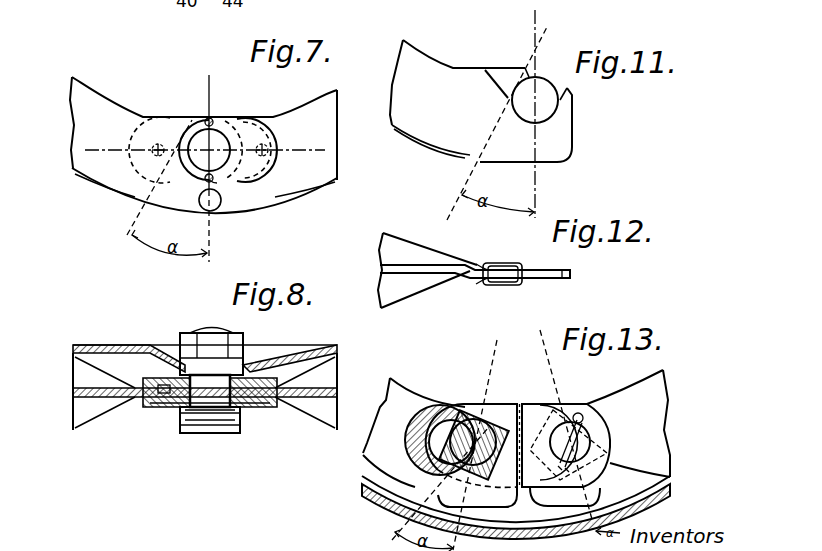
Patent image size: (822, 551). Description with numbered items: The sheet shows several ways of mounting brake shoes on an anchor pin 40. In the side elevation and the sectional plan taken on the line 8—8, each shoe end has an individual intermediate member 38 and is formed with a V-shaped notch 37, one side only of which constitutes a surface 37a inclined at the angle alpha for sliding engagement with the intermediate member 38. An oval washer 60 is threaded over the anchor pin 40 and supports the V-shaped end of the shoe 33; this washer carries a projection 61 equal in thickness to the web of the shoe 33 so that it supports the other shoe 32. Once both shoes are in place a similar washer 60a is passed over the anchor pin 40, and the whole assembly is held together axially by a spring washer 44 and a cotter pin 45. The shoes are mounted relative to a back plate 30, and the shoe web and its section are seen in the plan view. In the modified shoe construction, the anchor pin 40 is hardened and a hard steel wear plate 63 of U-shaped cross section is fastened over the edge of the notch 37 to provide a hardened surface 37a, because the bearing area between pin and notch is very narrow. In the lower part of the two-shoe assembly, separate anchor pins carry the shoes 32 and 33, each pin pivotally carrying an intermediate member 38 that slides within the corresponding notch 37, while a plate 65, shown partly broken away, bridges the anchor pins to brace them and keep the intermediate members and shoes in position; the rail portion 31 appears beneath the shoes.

In FIG. 7, the section line 8— 8 is at (92, 148).
In FIG. 8, the back plate 30 is at (88, 346).
In FIG. 13, the back plate 30 is at (388, 482).
In FIG. 13, the rail flange 31 is at (380, 505).
In FIG. 7, the shoe 32 is at (100, 123).
In FIG. 8, the shoe 32 is at (72, 400).
In FIG. 11, the shoe 32 is at (436, 77).
In FIG. 12, the shoe 32 is at (400, 256).
In FIG. 13, the shoe 32 is at (391, 383).
In FIG. 7, the shoe 33 is at (305, 112).
In FIG. 8, the shoe 33 is at (310, 400).
In FIG. 13, the shoe 33 is at (633, 420).
In FIG. 7, the notch 37 is at (187, 127).
In FIG. 11, the notch 37 is at (552, 113).
In FIG. 13, the notch 37 is at (445, 453).
In FIG. 7, the inclined surface 37a is at (186, 132).
In FIG. 11, the inclined surface 37a is at (540, 72).
In FIG. 12, the inclined surface 37a is at (521, 279).
In FIG. 13, the inclined surface 37a is at (463, 417).
In FIG. 8, the intermediate member 38 is at (255, 380).
In FIG. 13, the intermediate member 38 is at (443, 435).
In FIG. 7, the anchor pin 40 is at (217, 162).
In FIG. 8, the anchor pin 40 is at (217, 433).
In FIG. 11, the anchor pin 40 is at (542, 99).
In FIG. 13, the anchor pin 40 is at (492, 420).
In FIG. 8, the spring washer 44 is at (237, 416).
In FIG. 8, the cotter pin 45 is at (184, 428).
In FIG. 8, the oval washer 60 is at (167, 378).
In FIG. 13, the oval washer 60 is at (518, 455).
In FIG. 7, the washer 60a is at (265, 167).
In FIG. 8, the washer 60a is at (163, 405).
In FIG. 13, the washer 60a is at (577, 420).
In FIG. 8, the projection 61 is at (160, 385).
In FIG. 11, the wear plate 63 is at (507, 80).
In FIG. 12, the wear plate 63 is at (504, 263).
In FIG. 13, the plate 65 is at (533, 420).